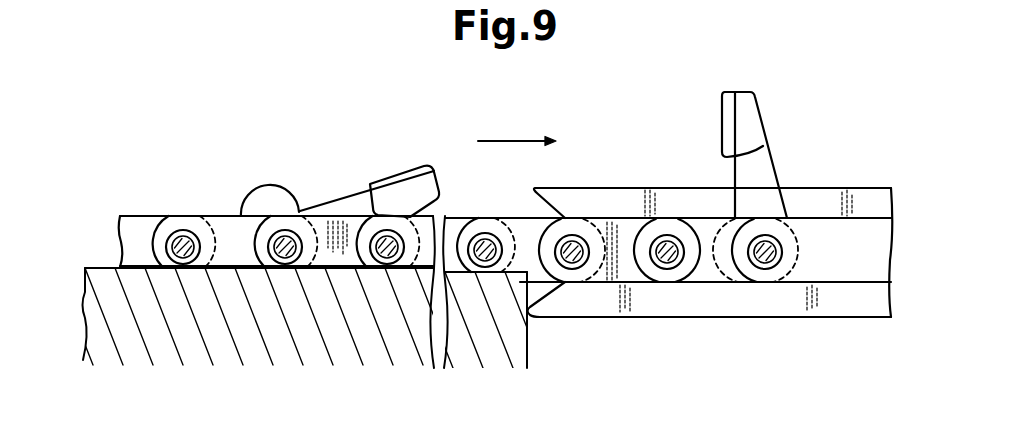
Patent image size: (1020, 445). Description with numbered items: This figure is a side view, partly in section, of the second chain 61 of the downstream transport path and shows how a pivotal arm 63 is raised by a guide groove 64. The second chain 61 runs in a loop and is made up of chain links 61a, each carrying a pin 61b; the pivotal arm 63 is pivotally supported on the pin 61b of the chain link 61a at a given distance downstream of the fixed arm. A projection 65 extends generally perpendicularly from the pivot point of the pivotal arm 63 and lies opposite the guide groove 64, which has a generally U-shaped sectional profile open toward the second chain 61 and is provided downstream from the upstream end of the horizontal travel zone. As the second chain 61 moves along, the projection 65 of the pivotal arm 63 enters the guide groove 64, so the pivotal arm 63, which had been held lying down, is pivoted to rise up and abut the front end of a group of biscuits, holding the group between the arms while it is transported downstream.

The second chain 61 is at (132, 206).
The chain link 61a is at (228, 228).
The pin 61b is at (287, 231).
The pivotal arm 63 is at (357, 197).
The guide groove 64 is at (863, 275).
The projection 65 is at (265, 190).